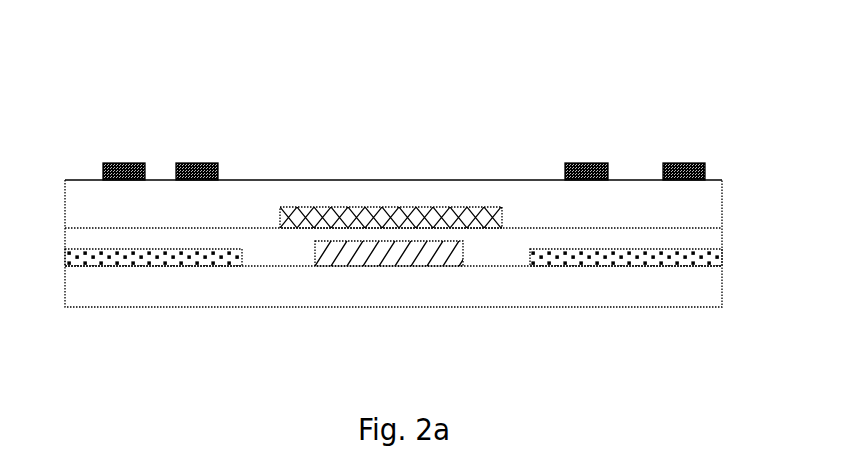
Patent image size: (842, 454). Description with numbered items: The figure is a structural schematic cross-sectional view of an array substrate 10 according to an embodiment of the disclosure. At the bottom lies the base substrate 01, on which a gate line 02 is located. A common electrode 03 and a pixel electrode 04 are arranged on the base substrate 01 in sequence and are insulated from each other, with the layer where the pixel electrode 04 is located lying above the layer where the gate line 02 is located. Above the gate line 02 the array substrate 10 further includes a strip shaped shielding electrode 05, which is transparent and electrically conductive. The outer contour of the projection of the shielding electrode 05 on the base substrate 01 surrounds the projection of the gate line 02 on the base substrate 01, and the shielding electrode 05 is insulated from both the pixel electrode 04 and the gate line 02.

The base substrate 01 is at (503, 292).
The gate line 02 is at (393, 257).
The common electrode 03 is at (163, 265).
The pixel electrode 04 is at (115, 172).
The shielding electrode 05 is at (375, 212).
The array substrate 10 is at (392, 92).